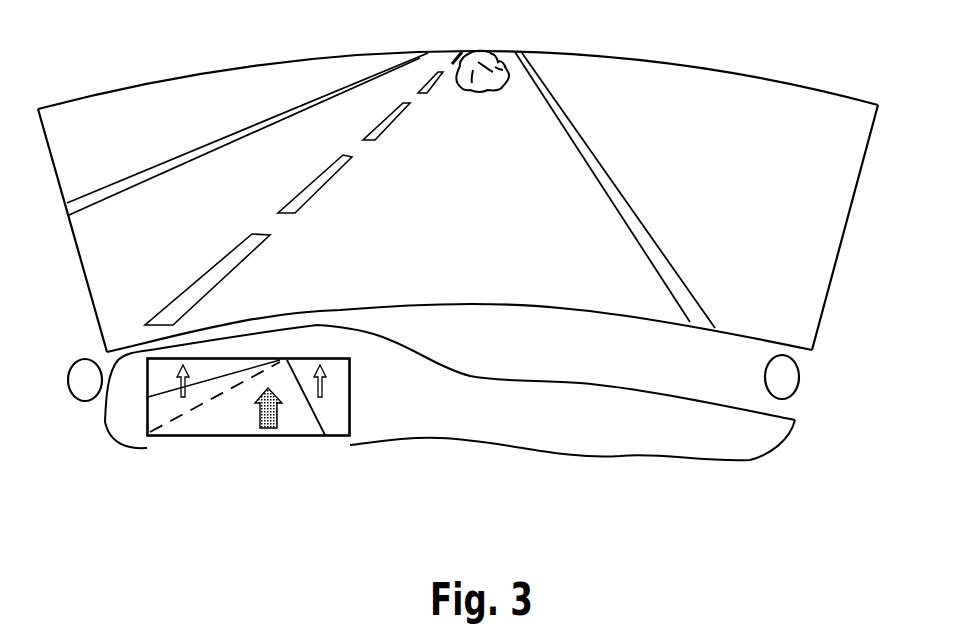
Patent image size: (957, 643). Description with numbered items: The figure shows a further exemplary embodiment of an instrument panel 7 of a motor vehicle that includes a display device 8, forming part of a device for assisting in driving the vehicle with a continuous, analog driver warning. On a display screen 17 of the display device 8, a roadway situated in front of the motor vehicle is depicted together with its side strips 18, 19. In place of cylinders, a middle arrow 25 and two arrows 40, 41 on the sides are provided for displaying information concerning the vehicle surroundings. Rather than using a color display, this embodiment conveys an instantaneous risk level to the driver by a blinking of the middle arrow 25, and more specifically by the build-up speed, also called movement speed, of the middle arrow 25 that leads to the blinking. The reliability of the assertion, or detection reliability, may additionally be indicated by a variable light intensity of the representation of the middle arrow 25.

The instrument panel 7 is at (492, 413).
The display device 8 is at (347, 441).
The display screen 17 is at (124, 443).
The side strip 18 is at (212, 380).
The side strip 19 is at (312, 413).
The middle arrow 25 is at (268, 428).
The arrow 40 is at (204, 382).
The arrow 41 is at (326, 382).